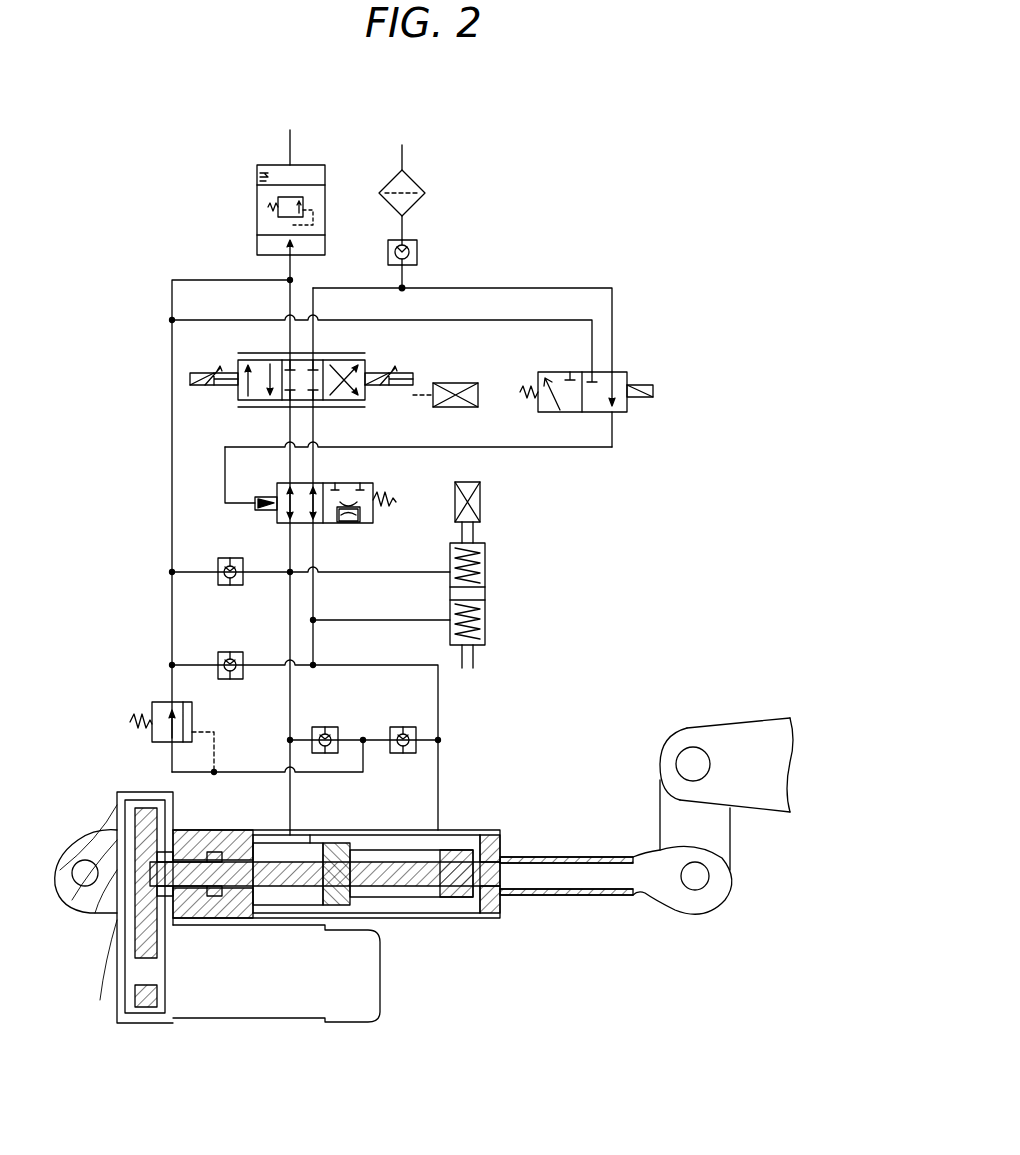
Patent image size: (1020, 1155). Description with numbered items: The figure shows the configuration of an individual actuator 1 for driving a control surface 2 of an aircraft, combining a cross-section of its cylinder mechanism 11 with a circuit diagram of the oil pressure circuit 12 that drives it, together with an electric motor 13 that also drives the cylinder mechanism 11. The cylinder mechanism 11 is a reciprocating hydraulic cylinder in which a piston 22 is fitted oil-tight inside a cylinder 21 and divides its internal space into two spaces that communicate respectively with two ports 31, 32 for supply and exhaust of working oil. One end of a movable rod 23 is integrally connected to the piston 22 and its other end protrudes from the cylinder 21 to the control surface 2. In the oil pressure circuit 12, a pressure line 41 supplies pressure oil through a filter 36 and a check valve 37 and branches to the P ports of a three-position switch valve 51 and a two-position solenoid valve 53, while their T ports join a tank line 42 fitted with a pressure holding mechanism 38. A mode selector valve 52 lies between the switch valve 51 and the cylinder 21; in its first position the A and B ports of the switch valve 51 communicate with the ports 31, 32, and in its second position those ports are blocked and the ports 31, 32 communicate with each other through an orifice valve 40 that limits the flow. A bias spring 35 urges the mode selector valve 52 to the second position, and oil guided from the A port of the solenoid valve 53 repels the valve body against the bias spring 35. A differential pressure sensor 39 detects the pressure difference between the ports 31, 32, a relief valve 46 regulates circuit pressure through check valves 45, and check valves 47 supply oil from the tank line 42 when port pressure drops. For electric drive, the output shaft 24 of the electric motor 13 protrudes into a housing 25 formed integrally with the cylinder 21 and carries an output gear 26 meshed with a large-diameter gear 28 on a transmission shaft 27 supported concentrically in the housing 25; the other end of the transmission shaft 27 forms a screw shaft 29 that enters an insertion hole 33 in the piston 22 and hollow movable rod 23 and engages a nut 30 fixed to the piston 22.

The actuator 1 is at (668, 988).
The control surface 2 is at (762, 722).
The cylinder mechanism 11 is at (518, 925).
The oil pressure circuit 12 is at (650, 195).
The electric motor 13 is at (370, 990).
The cylinder 21 is at (408, 918).
The piston 22 is at (343, 836).
The movable rod 23 is at (533, 857).
The output shaft 24 is at (157, 985).
The housing 25 is at (117, 925).
The output gear 26 is at (135, 995).
The transmission shaft 27 is at (185, 845).
The large-diameter gear 28 is at (135, 820).
The screw shaft 29 is at (453, 880).
The nut 30 is at (310, 835).
The port 31 is at (290, 830).
The port 32 is at (440, 831).
The insertion hole 33 is at (590, 900).
The bias spring 35 is at (396, 502).
The filter 36 is at (418, 182).
The check valve 37 is at (417, 243).
The pressure holding mechanism 38 is at (257, 207).
The differential pressure sensor 39 is at (490, 596).
The orifice valve 40 is at (347, 522).
The pressure line 41 is at (404, 287).
The tank line 42 is at (172, 300).
The check valve 45 is at (325, 727).
The relief valve 46 is at (157, 702).
The check valve 47 is at (228, 558).
The switch valve 51 is at (385, 354).
The mode selector valve 52 is at (382, 485).
The solenoid valve 53 is at (570, 418).